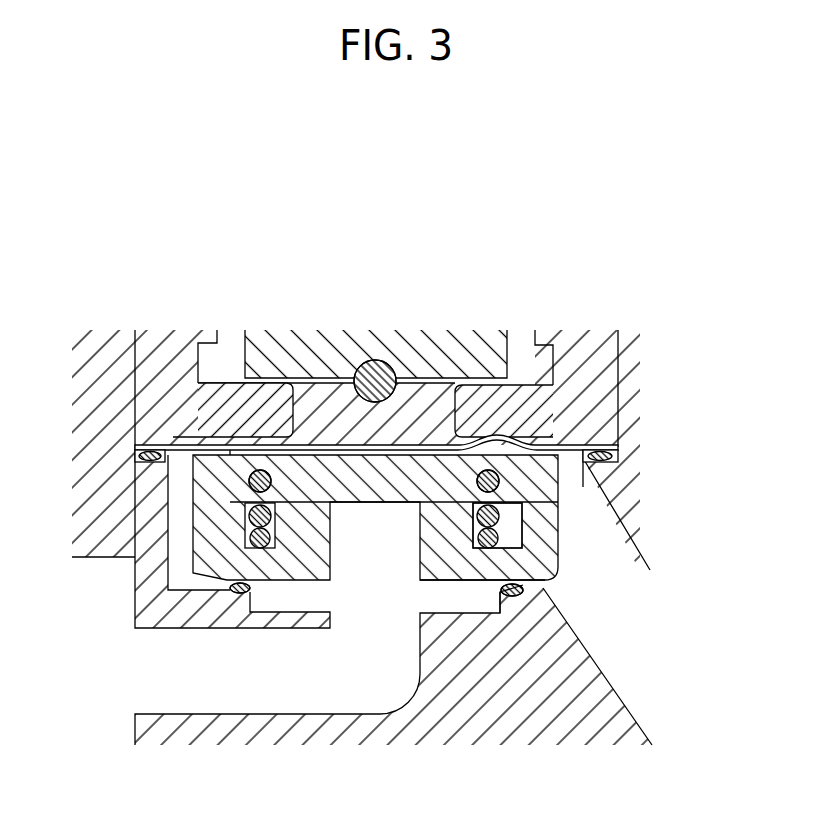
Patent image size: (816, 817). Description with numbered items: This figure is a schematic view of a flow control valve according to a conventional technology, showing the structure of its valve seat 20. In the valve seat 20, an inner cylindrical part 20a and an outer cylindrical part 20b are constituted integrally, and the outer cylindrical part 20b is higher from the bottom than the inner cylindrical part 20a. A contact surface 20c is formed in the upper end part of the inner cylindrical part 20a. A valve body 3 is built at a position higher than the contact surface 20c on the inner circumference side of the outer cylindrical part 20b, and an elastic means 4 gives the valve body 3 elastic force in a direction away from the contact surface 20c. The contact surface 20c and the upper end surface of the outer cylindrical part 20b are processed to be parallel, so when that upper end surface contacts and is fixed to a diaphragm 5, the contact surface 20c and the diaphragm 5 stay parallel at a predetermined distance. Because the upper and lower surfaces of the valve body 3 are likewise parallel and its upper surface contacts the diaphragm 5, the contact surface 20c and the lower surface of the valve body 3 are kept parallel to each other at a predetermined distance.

The valve body 3 is at (452, 467).
The elastic means 4 is at (228, 517).
The diaphragm 5 is at (245, 412).
The valve seat 20 is at (713, 477).
The inner cylindrical part 20a is at (450, 565).
The outer cylindrical part 20b is at (600, 462).
The contact surface 20c is at (503, 515).